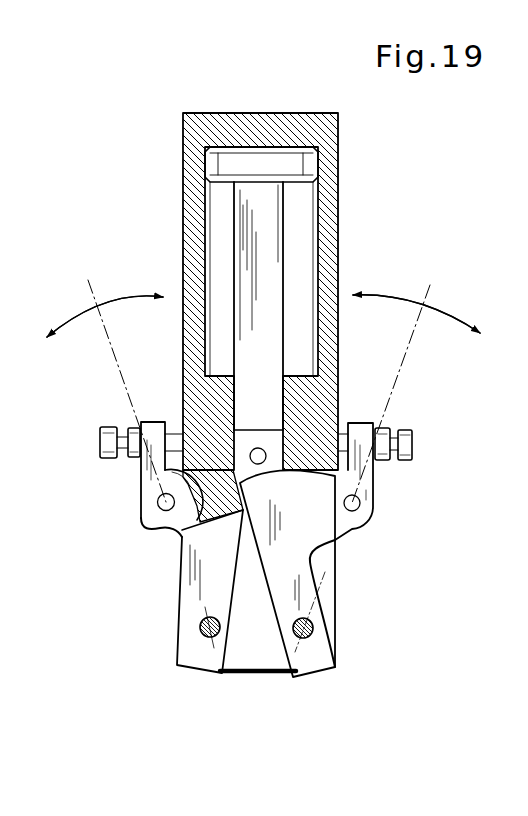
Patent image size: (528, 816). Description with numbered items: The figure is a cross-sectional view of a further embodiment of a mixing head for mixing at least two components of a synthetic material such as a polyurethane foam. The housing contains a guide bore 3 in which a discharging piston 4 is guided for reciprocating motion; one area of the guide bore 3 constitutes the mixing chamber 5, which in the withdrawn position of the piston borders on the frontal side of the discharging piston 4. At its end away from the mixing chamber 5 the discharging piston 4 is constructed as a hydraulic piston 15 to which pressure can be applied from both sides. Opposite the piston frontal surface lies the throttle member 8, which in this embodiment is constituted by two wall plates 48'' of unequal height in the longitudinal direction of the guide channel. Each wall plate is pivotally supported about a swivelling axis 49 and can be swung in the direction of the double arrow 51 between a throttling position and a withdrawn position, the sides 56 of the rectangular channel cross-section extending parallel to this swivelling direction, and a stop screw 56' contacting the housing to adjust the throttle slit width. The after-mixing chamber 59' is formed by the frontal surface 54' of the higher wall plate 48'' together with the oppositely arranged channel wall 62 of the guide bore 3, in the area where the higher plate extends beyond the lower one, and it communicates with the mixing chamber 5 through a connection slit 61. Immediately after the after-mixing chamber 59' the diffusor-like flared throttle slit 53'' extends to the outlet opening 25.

The guide bore 3 is at (270, 440).
The discharging piston 4 is at (267, 275).
The mixing chamber 5 is at (242, 442).
The throttle member 8 is at (377, 507).
The hydraulic piston 15 is at (303, 162).
The outlet opening 25 is at (275, 675).
The wall plates 48'' is at (272, 573).
The swivelling axis 49 is at (197, 640).
The double arrow 51 is at (112, 303).
The throttle slit 53'' is at (351, 593).
The frontal surface 54' is at (349, 590).
The side 56 is at (113, 435).
The stop screw 56' is at (417, 433).
The after-mixing chamber 59' is at (183, 527).
The connection slit 61 is at (158, 498).
The channel wall 62 is at (140, 529).